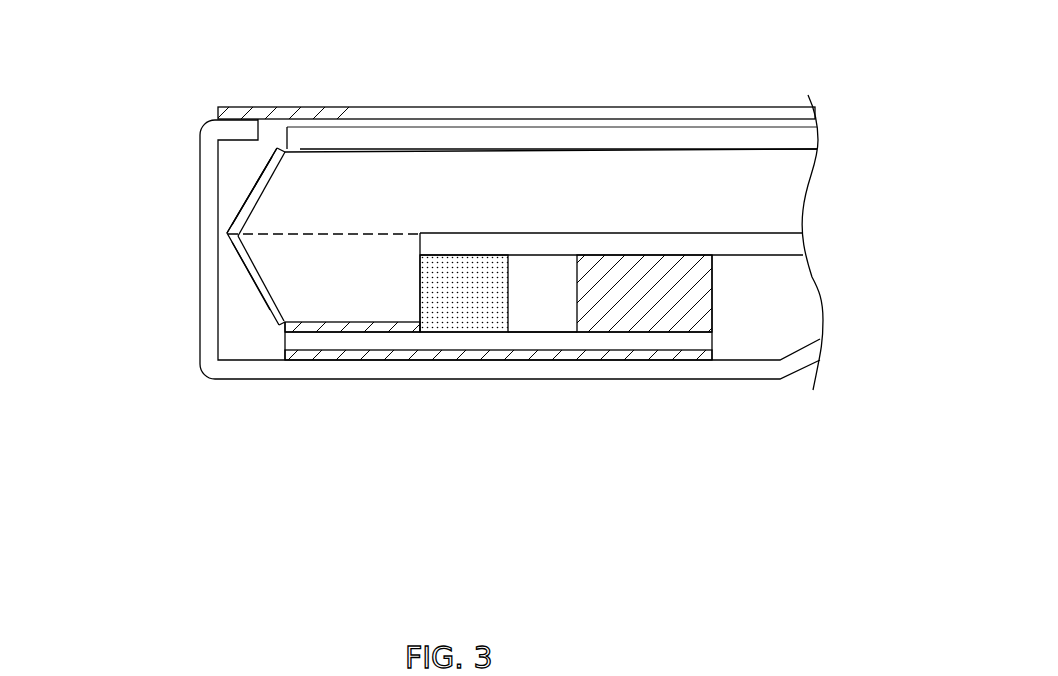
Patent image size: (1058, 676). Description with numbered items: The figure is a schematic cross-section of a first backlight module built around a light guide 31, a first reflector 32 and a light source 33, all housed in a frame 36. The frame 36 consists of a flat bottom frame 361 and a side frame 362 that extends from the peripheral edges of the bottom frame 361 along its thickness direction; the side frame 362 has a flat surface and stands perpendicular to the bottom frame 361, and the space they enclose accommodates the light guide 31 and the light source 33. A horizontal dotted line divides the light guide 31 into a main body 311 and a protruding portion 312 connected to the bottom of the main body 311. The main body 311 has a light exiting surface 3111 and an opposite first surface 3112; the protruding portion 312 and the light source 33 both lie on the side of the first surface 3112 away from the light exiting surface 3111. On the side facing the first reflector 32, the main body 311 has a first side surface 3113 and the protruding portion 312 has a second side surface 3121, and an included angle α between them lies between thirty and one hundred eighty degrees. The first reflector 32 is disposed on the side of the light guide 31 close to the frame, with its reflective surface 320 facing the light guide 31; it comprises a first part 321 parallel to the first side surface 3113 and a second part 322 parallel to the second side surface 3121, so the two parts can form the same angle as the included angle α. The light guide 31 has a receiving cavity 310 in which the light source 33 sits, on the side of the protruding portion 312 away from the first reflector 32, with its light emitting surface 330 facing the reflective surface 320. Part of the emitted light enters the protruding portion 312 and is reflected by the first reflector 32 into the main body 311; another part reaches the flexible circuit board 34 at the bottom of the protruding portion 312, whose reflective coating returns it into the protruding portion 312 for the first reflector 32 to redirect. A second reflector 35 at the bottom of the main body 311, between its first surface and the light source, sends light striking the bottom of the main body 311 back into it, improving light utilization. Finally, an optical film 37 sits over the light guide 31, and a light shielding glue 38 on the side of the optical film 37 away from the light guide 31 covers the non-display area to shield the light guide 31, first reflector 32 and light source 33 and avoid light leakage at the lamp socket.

The light guide 31 is at (243, 597).
The main body 311 is at (393, 170).
The light exiting surface 3111 is at (648, 140).
The first surface 3112 is at (447, 224).
The first side surface 3113 is at (292, 160).
The protruding portion 312 is at (355, 297).
The second side surface 3121 is at (291, 307).
The first reflector 32 is at (368, 597).
The reflective surface 320 is at (266, 306).
The first part 321 is at (257, 191).
The second part 322 is at (250, 272).
The light source 33 is at (482, 320).
The light emitting surface 330 is at (432, 308).
The receiving cavity 310 is at (533, 318).
The flexible circuit board 34 is at (588, 343).
The second reflector 35 is at (738, 247).
The frame 36 is at (488, 597).
The bottom frame 361 is at (667, 366).
The side frame 362 is at (207, 258).
The optical film 37 is at (552, 143).
The light shielding glue 38 is at (245, 105).